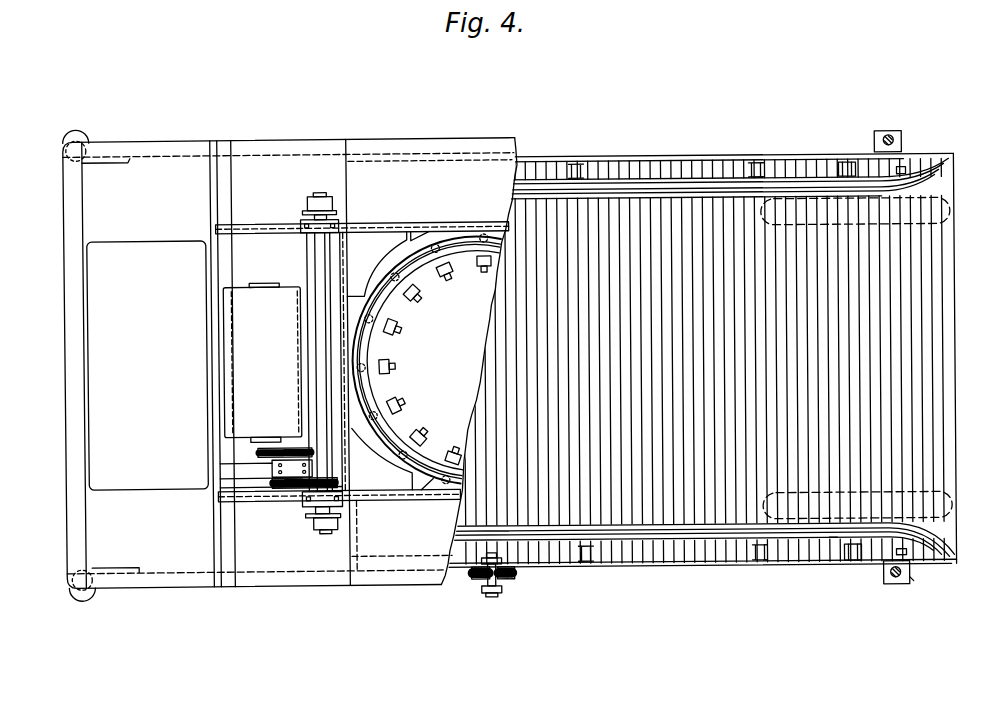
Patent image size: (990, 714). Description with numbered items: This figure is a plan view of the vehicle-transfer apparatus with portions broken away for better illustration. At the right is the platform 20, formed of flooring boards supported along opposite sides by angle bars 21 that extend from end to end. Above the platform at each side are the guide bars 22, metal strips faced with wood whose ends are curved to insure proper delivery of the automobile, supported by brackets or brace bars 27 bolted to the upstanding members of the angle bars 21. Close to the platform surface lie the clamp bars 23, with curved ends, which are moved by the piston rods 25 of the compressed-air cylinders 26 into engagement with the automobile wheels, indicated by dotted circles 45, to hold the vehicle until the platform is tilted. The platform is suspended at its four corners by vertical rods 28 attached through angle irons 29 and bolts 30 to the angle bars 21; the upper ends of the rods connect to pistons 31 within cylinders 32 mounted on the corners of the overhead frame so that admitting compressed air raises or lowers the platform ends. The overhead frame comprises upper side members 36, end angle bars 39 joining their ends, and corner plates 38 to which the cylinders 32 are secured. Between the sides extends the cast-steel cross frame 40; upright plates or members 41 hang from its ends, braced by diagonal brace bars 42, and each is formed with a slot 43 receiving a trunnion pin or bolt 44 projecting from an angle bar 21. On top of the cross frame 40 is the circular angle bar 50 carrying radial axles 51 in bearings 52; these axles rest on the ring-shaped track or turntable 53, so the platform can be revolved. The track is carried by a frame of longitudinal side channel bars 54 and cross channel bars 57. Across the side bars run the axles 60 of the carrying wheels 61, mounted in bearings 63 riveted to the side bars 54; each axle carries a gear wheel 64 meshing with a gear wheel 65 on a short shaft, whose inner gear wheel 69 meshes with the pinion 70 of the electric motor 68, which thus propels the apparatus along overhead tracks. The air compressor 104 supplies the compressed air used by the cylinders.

The platform 20 is at (893, 408).
The angle bars 21 is at (662, 157).
The guide bars 22 is at (696, 183).
The clamp bars 23 is at (650, 200).
The piston rods 25 is at (832, 541).
The cylinders 26 is at (844, 164).
The brackets or brace bars 27 is at (580, 164).
The vertical rods 28 is at (893, 138).
The angle irons 29 is at (910, 580).
The bolts 30 is at (907, 172).
The pistons 31 is at (80, 138).
The cylinders 32 is at (92, 139).
The upper side members 36 is at (283, 131).
The corner plates 38 is at (110, 165).
The angle bars 39 is at (64, 393).
The cross frame 40 is at (432, 365).
The upright plates or members 41 is at (470, 572).
The brace bars 42 is at (510, 573).
The slot 43 is at (488, 580).
The trunnion pin or bolt 44 is at (490, 594).
The dotted circles 45 is at (825, 228).
The circular angle bar 50 is at (455, 451).
The axles 51 is at (392, 285).
The bearings 52 is at (446, 277).
The track or turntable 53 is at (406, 260).
The side channel bars 54 is at (410, 229).
The cross channel bars 57 is at (352, 470).
The axles 60 is at (322, 266).
The carrying wheels 61 is at (335, 204).
The bearings 63 is at (342, 228).
The gear wheel 64 is at (336, 485).
The gear wheel 65 is at (280, 490).
The electric motor 68 is at (262, 363).
The gear wheel 69 is at (290, 448).
The pinion 70 is at (262, 450).
The air compressor 104 is at (148, 365).